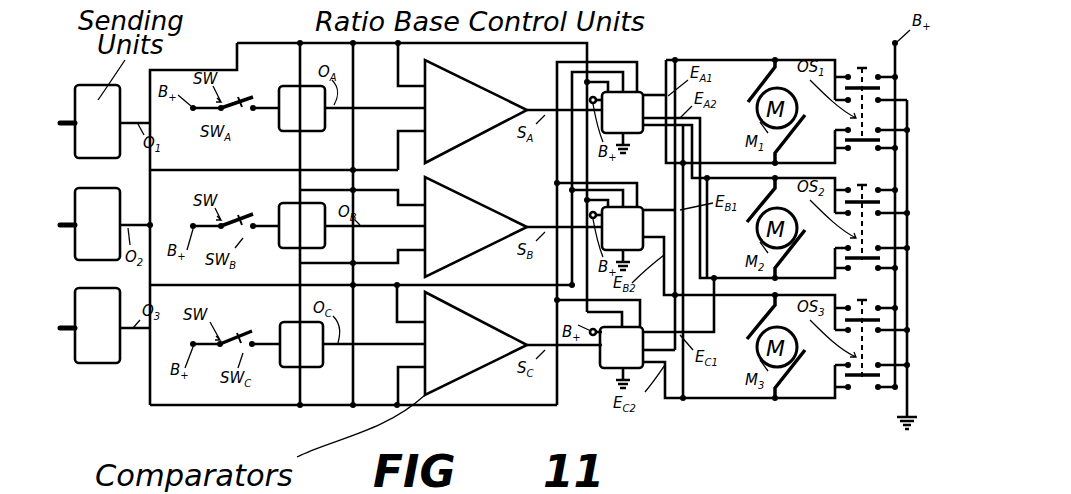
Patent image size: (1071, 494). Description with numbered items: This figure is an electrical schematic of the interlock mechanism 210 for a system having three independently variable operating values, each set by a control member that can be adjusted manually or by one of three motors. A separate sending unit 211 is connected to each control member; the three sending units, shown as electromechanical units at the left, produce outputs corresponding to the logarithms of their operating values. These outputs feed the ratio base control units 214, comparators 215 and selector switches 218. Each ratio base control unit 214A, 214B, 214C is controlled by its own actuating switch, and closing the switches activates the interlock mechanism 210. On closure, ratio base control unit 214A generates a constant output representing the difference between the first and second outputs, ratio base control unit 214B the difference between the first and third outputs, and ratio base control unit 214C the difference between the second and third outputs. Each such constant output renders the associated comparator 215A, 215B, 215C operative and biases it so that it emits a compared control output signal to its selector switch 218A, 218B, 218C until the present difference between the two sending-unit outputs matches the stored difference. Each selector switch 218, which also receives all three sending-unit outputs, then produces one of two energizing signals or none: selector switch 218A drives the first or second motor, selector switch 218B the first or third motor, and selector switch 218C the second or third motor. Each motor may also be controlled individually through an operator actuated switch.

The interlock mechanism 210 is at (297, 418).
The sending unit 211 is at (82, 98).
The ratio base control unit 214 is at (310, 231).
The ratio base control unit 214A is at (292, 122).
The ratio base control unit 214B is at (322, 238).
The ratio base control unit 214C is at (306, 358).
The comparator 215 is at (476, 230).
The comparator 215A is at (460, 132).
The comparator 215B is at (460, 247).
The comparator 215C is at (460, 365).
The selector switch 218 is at (628, 219).
The selector switch 218A is at (622, 112).
The selector switch 218B is at (622, 228).
The selector switch 218C is at (621, 347).